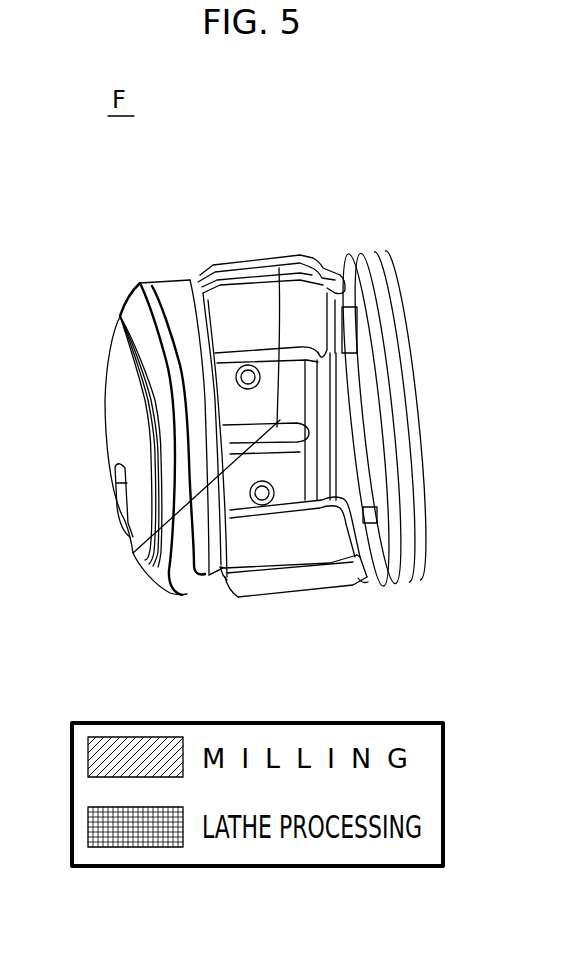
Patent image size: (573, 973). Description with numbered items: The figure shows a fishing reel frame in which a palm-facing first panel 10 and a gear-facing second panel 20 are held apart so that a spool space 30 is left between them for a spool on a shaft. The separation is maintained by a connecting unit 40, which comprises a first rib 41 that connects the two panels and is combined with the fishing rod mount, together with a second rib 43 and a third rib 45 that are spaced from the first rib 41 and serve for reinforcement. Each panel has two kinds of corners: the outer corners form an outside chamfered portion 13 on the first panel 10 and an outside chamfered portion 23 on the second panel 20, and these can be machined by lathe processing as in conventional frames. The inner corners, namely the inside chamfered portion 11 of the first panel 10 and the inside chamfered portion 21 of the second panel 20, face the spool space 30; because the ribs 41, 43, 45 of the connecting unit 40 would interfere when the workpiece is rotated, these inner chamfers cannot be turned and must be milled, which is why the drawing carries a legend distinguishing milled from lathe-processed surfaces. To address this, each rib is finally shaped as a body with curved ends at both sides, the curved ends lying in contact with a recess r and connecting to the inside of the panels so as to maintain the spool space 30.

The first panel 10 is at (112, 298).
The inside chamfered portion 11 is at (189, 280).
The outside chamfered portion 13 is at (150, 302).
The second panel 20 is at (395, 257).
The inside chamfered portion 21 is at (343, 250).
The outside chamfered portion 23 is at (378, 257).
The spool space 30 is at (238, 315).
The connecting unit 40 is at (198, 657).
The first rib 41 is at (293, 495).
The second rib 43 is at (132, 553).
The third rib 45 is at (282, 596).
The recess r is at (362, 585).